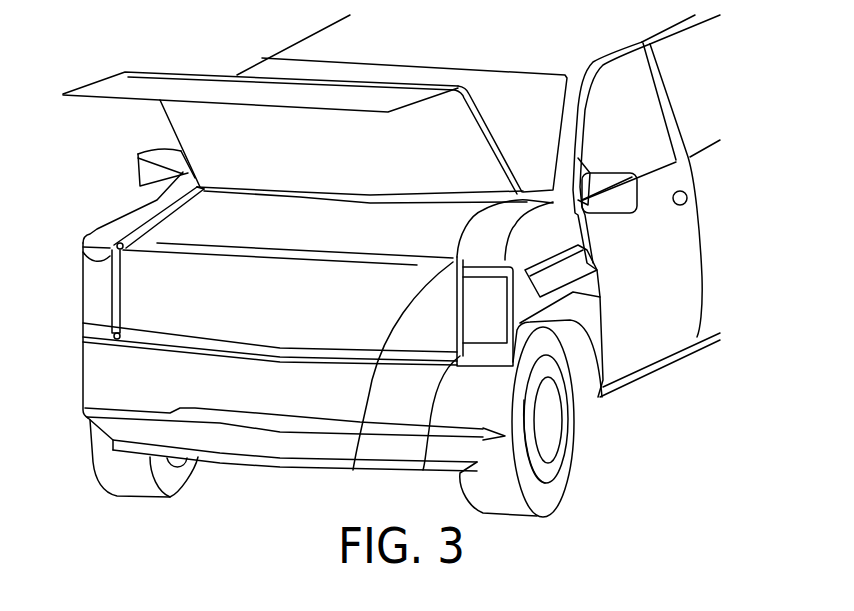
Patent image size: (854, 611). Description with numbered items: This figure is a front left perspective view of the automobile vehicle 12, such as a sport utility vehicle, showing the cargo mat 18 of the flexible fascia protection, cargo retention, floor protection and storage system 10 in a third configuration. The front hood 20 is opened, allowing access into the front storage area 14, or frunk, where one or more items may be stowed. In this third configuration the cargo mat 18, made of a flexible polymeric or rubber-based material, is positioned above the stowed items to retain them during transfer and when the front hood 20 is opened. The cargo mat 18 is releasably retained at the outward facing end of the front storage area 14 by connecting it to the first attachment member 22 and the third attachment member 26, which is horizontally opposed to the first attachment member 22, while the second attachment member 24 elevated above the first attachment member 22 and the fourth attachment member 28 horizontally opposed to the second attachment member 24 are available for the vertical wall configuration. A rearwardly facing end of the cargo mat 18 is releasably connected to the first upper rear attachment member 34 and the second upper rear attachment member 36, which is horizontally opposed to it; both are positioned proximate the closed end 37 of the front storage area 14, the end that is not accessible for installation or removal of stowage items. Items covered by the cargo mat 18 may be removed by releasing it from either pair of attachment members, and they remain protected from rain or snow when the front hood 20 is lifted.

The flexible fascia protection, cargo retention, floor protection and storage system 10 is at (665, 423).
The automobile vehicle 12 is at (93, 231).
The front storage area 14 is at (150, 213).
The cargo mat 18 is at (193, 307).
The front hood 20 is at (172, 73).
The first attachment member 22 is at (117, 332).
The second attachment member 24 is at (103, 261).
The third attachment member 26 is at (423, 470).
The fourth attachment member 28 is at (353, 470).
The first upper rear attachment member 34 is at (140, 159).
The second upper rear attachment member 36 is at (582, 207).
The closed end 37 is at (437, 188).